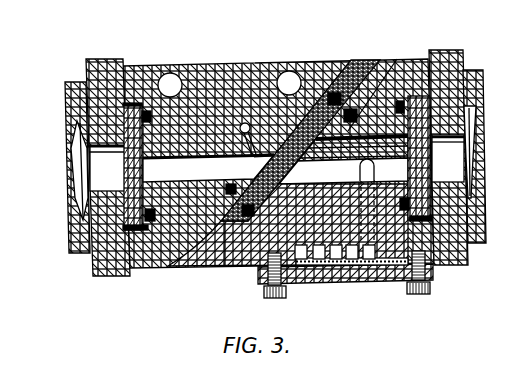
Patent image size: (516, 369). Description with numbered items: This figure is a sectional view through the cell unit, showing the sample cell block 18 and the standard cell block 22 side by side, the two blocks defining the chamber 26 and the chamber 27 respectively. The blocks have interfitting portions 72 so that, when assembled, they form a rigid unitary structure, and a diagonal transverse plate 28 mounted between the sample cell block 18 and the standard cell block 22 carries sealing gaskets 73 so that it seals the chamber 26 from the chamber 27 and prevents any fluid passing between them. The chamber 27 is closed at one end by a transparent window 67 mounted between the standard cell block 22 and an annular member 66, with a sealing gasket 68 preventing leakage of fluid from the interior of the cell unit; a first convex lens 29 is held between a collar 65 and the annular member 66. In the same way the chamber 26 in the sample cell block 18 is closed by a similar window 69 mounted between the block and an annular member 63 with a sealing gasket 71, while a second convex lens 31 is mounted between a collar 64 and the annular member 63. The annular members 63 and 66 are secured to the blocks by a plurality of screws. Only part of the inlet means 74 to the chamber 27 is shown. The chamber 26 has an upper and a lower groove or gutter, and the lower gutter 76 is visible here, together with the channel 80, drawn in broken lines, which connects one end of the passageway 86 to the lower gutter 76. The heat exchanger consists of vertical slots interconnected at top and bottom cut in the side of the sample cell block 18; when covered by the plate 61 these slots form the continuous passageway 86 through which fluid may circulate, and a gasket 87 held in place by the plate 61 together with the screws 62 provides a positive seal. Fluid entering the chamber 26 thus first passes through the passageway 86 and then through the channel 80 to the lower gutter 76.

The standard cell block 22 is at (192, 58).
The annular member 66 is at (93, 270).
The collar 65 is at (64, 246).
The first convex lens 29 is at (66, 150).
The transparent window 67 is at (122, 164).
The sealing gasket 68 is at (138, 215).
The chamber 27 is at (208, 168).
The chamber 26 is at (343, 160).
The diagonal transverse plate 28 is at (252, 157).
The sample cell block 18 is at (188, 265).
The channel 80 is at (357, 206).
The lower gutter 76 is at (393, 150).
The interfitting portions 72 is at (362, 52).
The sealing gaskets 73 is at (320, 85).
The sealing gasket 71 is at (389, 51).
The window 69 is at (414, 161).
The annular member 63 is at (458, 260).
The collar 64 is at (477, 233).
The second convex lens 31 is at (466, 150).
The plate 61 is at (340, 268).
The screws 62 is at (256, 286).
The gasket 87 is at (363, 258).
The passageway 86 is at (322, 260).
The inlet means 74 is at (232, 121).